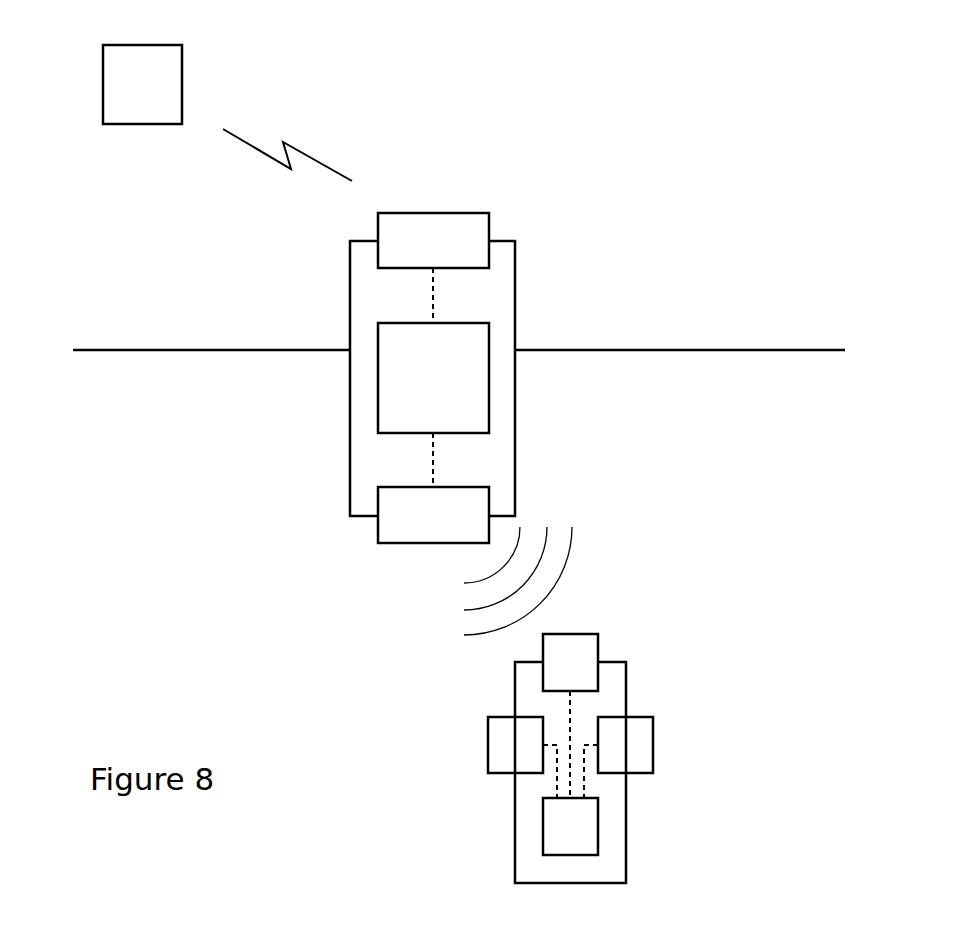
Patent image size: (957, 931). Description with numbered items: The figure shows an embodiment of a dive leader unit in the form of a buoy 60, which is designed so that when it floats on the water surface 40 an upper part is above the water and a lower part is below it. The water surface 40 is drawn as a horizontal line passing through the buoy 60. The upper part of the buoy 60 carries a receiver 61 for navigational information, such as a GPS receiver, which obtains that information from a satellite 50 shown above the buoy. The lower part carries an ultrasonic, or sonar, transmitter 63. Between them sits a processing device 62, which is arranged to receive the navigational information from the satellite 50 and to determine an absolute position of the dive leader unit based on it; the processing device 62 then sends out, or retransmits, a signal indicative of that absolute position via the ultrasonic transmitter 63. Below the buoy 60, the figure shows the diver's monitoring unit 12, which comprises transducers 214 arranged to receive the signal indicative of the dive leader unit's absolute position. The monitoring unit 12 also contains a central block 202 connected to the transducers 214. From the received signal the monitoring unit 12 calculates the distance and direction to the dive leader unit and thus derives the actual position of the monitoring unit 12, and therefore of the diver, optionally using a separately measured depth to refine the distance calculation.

The satellite 50 is at (157, 97).
The buoy 60 is at (516, 270).
The receiver 61 is at (418, 252).
The processing device 62 is at (418, 390).
The ultrasonic transmitter 63 is at (418, 527).
The water surface 40 is at (818, 351).
The monitoring unit 12 is at (627, 823).
The transducers 214 is at (549, 672).
The processing unit 202 is at (549, 838).